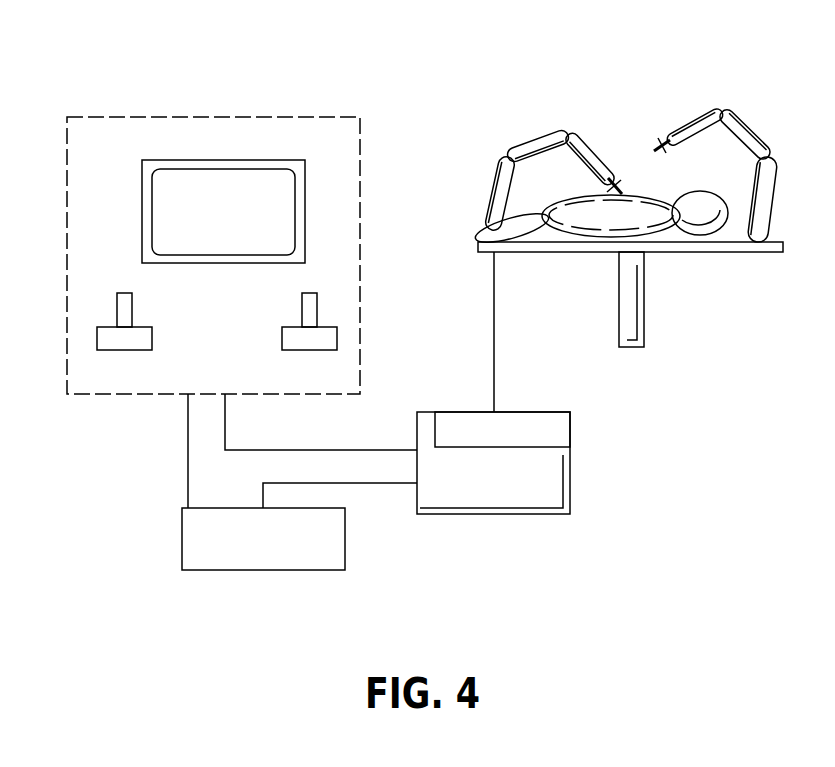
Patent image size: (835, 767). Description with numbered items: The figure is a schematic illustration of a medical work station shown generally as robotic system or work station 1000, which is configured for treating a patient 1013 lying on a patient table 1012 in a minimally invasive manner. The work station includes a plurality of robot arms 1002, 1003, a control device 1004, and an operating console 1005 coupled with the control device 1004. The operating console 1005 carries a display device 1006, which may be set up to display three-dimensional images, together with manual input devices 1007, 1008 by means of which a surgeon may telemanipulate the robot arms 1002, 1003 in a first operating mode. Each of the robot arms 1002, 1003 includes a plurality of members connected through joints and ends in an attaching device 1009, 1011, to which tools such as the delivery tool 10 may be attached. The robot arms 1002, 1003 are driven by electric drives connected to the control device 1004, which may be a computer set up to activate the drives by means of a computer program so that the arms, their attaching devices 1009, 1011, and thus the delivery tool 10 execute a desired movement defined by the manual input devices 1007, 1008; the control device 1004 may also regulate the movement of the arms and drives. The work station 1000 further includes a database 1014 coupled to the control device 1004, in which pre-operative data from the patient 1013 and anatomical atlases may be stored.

The delivery tool 10 is at (588, 186).
The robotic system or work station 1000 is at (702, 441).
The robot arm 1002 is at (498, 132).
The robot arm 1003 is at (752, 114).
The control device 1004 is at (493, 463).
The operating console 1005 is at (150, 92).
The display device 1006 is at (223, 211).
The manual input device 1007 is at (130, 342).
The manual input device 1008 is at (307, 342).
The attaching device 1009 is at (620, 176).
The attaching device 1011 is at (663, 136).
The patient table 1012 is at (552, 247).
The patient 1013 is at (655, 222).
The database 1014 is at (263, 539).